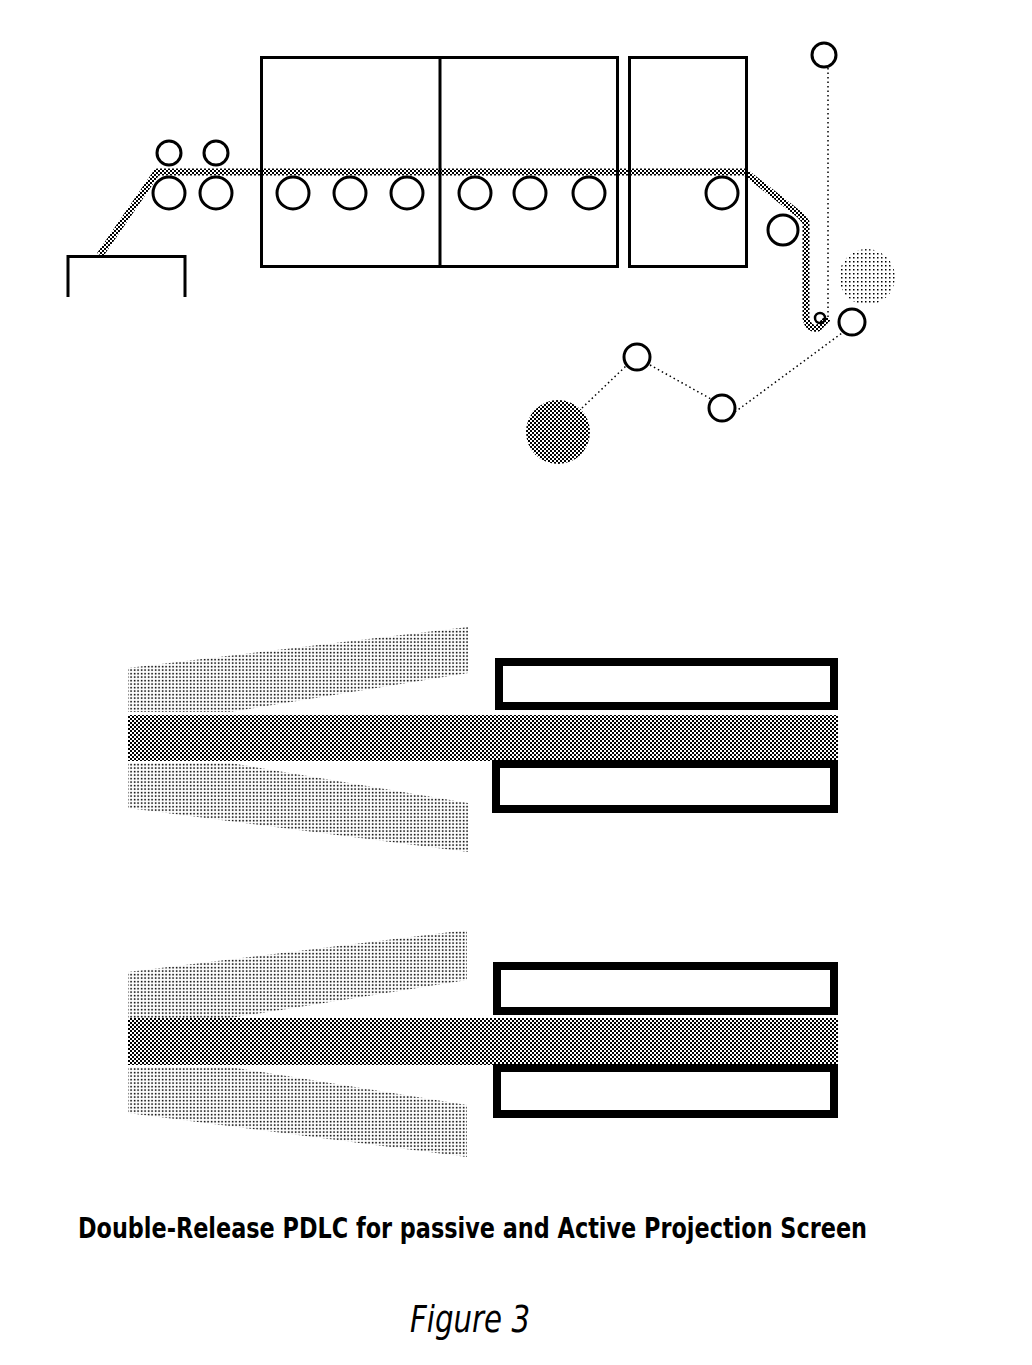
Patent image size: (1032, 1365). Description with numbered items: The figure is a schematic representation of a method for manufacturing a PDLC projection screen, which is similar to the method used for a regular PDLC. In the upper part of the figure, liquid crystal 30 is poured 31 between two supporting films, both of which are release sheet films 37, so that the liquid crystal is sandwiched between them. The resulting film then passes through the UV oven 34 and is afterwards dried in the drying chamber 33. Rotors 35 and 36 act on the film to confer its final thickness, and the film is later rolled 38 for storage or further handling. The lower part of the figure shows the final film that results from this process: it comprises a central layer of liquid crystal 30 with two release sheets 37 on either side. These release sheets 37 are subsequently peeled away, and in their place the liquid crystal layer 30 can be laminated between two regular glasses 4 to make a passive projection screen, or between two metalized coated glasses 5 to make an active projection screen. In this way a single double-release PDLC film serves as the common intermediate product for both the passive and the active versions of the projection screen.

The liquid crystal 30 is at (875, 245).
The pouring of the liquid crystal 31 is at (830, 328).
The drying chamber 33 is at (412, 55).
The UV oven 34 is at (665, 55).
The rotor 35 is at (218, 210).
The rotor 36 is at (173, 210).
The release sheet film 37 is at (835, 95).
The rolling of the film 38 is at (118, 215).
The regular glass 4 is at (838, 688).
The metalized coated glass 5 is at (840, 990).